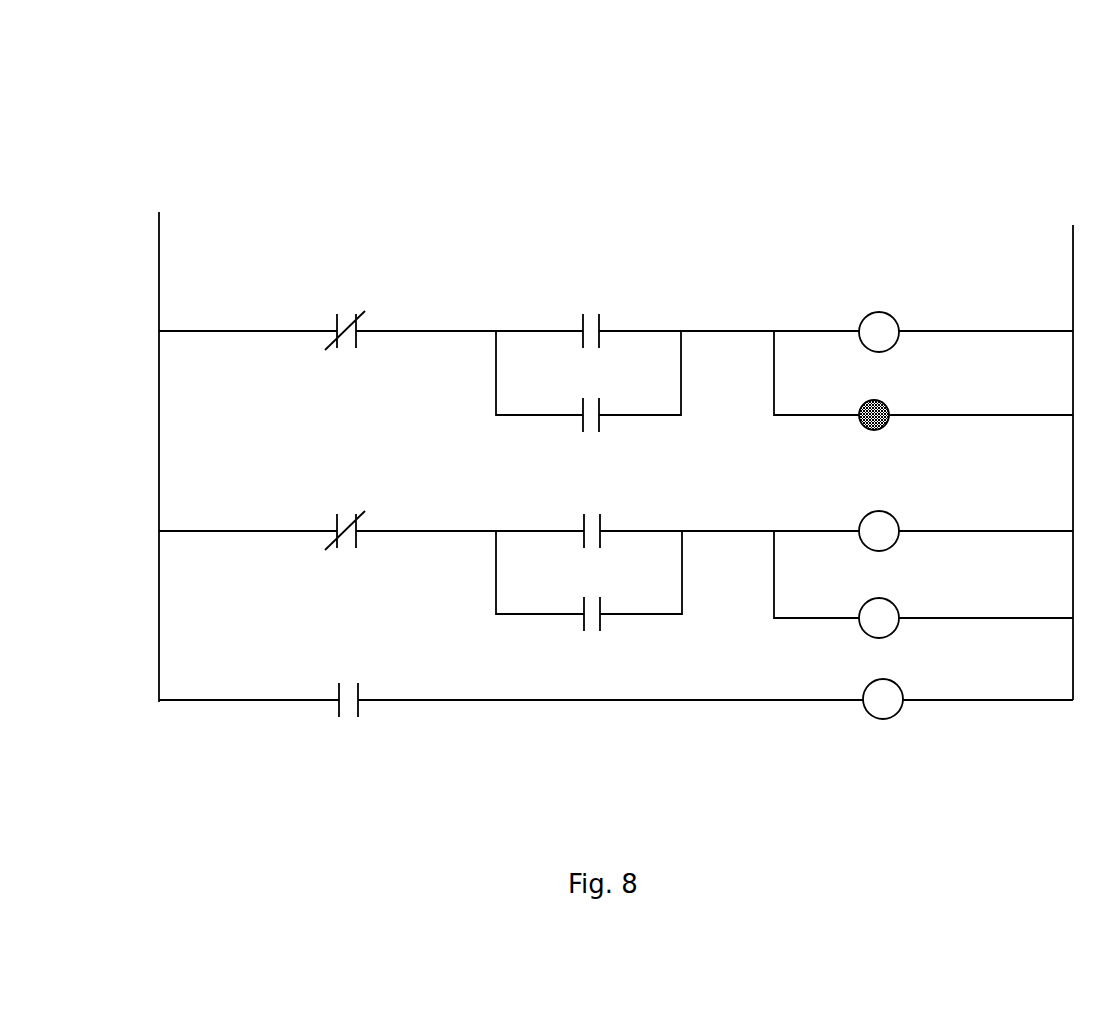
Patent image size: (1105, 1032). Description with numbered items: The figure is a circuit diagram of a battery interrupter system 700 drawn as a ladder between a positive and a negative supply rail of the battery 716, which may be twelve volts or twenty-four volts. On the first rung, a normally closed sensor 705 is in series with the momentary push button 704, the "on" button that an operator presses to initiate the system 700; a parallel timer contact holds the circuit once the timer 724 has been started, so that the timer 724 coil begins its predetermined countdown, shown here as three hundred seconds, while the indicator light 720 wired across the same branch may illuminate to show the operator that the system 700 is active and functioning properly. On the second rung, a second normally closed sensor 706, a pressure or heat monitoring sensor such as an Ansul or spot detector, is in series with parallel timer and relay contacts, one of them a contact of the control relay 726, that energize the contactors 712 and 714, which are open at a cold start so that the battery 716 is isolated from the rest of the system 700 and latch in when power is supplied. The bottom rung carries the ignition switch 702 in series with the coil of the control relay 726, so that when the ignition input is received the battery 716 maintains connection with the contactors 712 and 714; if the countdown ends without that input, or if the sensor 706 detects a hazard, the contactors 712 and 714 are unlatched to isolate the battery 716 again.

The battery interrupter system 700 is at (128, 119).
The battery 716 is at (198, 187).
The sensor 705 is at (347, 316).
The push button 704 is at (590, 287).
The timer 724 is at (606, 383).
The indicator light 720 is at (886, 427).
The sensor 706 is at (348, 518).
The contactor 712 is at (897, 513).
The contactor 714 is at (898, 603).
The ignition switch 702 is at (345, 690).
The control relay CR1 726 is at (606, 585).